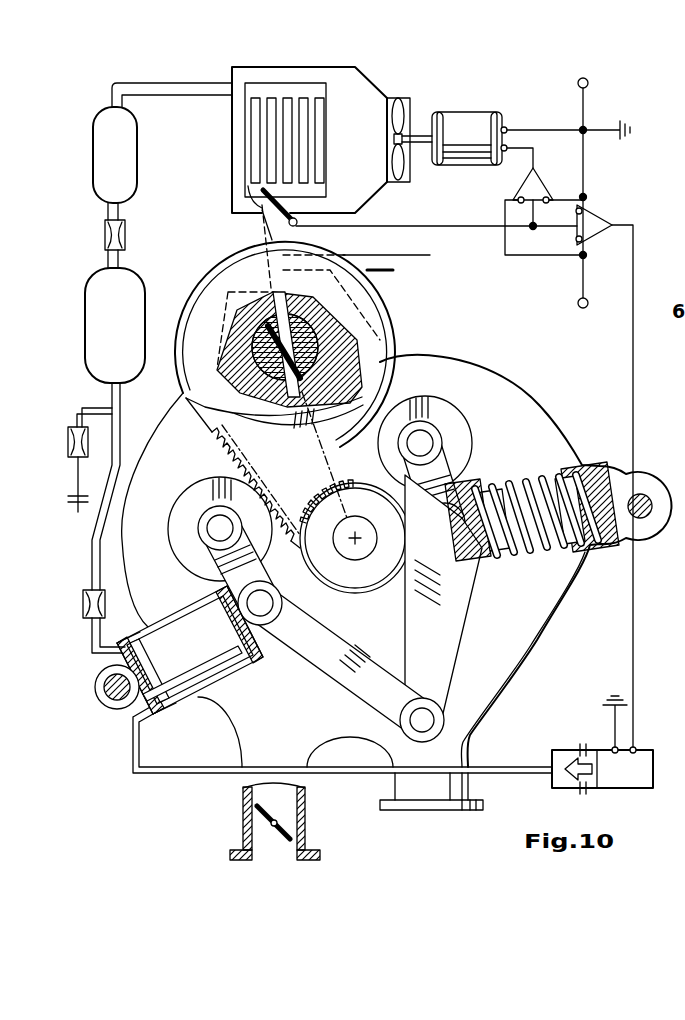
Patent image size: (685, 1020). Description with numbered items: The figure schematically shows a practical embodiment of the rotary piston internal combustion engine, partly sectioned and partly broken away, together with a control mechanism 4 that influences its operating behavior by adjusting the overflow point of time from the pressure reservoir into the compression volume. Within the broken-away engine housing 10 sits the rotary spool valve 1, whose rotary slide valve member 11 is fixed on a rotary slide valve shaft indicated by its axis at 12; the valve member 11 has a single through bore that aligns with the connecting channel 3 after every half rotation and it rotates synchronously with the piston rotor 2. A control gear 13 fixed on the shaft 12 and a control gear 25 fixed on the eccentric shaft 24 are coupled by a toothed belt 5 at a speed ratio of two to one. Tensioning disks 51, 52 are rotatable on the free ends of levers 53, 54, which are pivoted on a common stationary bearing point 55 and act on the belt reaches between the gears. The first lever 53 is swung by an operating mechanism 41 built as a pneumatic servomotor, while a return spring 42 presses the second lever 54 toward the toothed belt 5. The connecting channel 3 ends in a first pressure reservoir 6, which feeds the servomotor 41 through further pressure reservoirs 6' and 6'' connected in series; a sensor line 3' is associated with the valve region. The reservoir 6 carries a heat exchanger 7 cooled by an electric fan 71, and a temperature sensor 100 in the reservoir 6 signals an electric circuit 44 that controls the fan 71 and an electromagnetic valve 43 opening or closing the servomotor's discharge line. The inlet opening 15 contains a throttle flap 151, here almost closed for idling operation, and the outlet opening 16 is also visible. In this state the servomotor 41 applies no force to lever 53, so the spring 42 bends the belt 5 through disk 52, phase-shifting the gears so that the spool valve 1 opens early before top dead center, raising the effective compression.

The rotary spool valve 1 is at (396, 300).
The piston rotor 2 is at (299, 452).
The connecting channel 3 is at (301, 349).
The sensor line 3' is at (386, 249).
The control mechanism 4 is at (254, 666).
The toothed belt 5 is at (216, 264).
The first pressure reservoir 6 is at (252, 201).
The pressure reservoir 6' is at (162, 175).
The pressure reservoir 6'' is at (104, 454).
The heat exchanger 7 is at (310, 148).
The engine housing 10 is at (517, 676).
The rotary slide valve member 11 is at (253, 364).
The rotary slide valve shaft 12 is at (260, 340).
The control gear 13 is at (208, 282).
The inlet opening 15 is at (303, 818).
The outlet opening 16 is at (447, 810).
The eccentric shaft 24 is at (358, 555).
The control gear 25 is at (382, 570).
The operating mechanism 41 is at (198, 700).
The return spring 42 is at (555, 552).
The electromagnetic valve 43 is at (610, 765).
The electric circuit 44 is at (558, 236).
The tensioning disk 51 is at (202, 497).
The tensioning disk 52 is at (447, 422).
The first lever 53 is at (312, 655).
The second lever 54 is at (452, 649).
The common stationary bearing point 55 is at (426, 732).
The electric fan 71 is at (466, 125).
The temperature sensor 100 is at (262, 212).
The throttle flap 151 is at (255, 812).